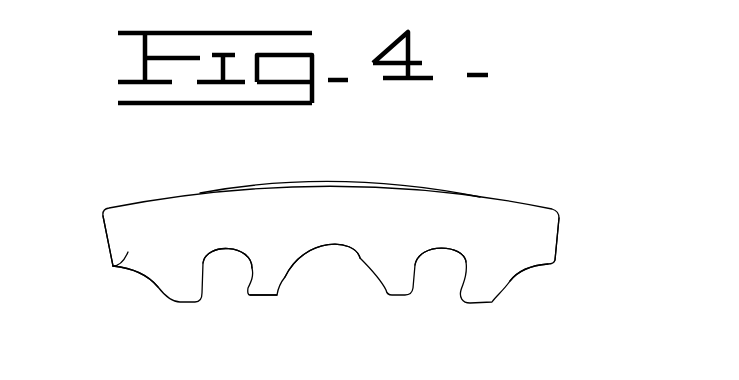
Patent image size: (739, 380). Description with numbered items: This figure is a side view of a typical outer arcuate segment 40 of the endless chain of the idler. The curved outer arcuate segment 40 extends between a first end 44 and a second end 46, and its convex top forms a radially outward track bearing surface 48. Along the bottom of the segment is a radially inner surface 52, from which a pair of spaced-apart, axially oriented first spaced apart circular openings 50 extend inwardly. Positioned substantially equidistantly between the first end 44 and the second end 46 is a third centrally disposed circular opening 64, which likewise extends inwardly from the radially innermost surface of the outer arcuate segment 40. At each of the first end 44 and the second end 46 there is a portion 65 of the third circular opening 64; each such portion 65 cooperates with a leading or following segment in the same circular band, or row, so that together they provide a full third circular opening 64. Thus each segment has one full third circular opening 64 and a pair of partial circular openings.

The outer arcuate segment 40 is at (378, 180).
The first end 44 is at (113, 266).
The second end 46 is at (547, 233).
The radially outward track bearing surface 48 is at (280, 188).
The first spaced apart circular openings 50 is at (202, 262).
The radially inner surface 52 is at (270, 296).
The third centrally disposed circular opening 64 is at (358, 258).
The portion of the third circular opening 65 is at (158, 287).